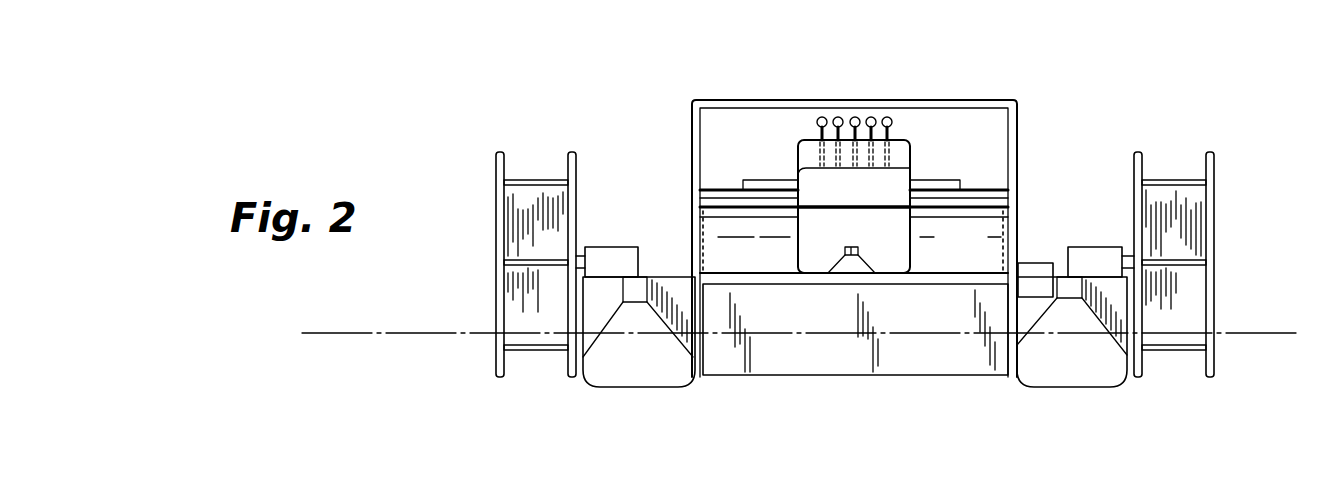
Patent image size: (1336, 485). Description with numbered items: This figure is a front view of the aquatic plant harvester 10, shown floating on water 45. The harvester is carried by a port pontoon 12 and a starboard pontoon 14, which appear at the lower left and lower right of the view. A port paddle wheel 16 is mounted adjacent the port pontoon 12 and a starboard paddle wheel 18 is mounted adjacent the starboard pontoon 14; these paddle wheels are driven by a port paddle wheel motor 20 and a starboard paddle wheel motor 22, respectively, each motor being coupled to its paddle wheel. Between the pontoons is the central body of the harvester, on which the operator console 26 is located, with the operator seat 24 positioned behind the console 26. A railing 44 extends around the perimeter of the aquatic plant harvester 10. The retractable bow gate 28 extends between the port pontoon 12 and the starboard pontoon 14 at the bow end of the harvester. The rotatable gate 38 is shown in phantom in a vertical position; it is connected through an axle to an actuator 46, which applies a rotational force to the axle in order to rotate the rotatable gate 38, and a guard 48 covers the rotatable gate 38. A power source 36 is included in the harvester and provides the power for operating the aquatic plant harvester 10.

The aquatic plant harvester 10 is at (1085, 93).
The port pontoon 12 is at (1083, 370).
The starboard pontoon 14 is at (634, 365).
The port paddle wheel 16 is at (1215, 157).
The starboard paddle wheel 18 is at (496, 158).
The port paddle wheel motor 20 is at (1085, 250).
The starboard paddle wheel motor 22 is at (613, 255).
The operator seat 24 is at (797, 152).
The operator console 26 is at (910, 145).
The retractable bow gate 28 is at (756, 368).
The power source 36 is at (963, 188).
The rotatable gate 38 is at (862, 357).
The railing 44 is at (1017, 118).
The water 45 is at (362, 351).
The actuator 46 is at (1030, 266).
The guard 48 is at (982, 265).